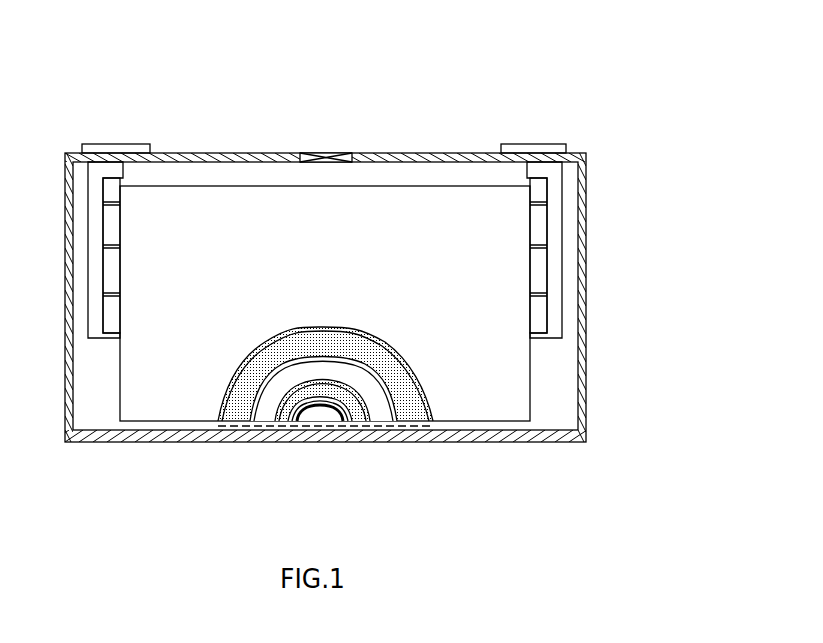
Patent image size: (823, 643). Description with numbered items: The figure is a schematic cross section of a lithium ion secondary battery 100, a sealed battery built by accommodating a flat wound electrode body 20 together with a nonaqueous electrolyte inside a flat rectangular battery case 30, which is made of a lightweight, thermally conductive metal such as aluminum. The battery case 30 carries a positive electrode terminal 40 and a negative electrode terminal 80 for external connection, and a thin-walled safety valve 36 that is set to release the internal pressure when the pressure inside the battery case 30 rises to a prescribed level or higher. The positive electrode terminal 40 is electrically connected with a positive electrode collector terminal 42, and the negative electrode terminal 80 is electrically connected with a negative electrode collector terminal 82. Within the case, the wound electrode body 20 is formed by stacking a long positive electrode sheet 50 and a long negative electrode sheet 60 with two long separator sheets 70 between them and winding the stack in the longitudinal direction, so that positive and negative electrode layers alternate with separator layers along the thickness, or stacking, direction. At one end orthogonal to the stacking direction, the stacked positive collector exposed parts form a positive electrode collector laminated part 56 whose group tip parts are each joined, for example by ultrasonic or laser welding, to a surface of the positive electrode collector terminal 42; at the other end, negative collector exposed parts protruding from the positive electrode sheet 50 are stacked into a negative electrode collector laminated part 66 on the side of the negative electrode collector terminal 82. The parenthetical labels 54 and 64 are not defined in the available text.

The lithium ion secondary battery 100 is at (602, 82).
The wound electrode body 20 is at (247, 185).
The battery case 30 is at (588, 380).
The safety valve 36 is at (333, 153).
The positive electrode terminal 40 is at (127, 144).
The positive electrode collector terminal 42 is at (95, 203).
The positive electrode sheet 50 is at (233, 418).
The positive electrode tab 54 is at (310, 429).
The positive electrode collector laminated part 56 is at (107, 228).
The negative electrode sheet 60 is at (288, 418).
The negative electrode tab 64 is at (322, 456).
The negative electrode collector laminated part 66 is at (543, 223).
The separator sheet 70 is at (165, 375).
The negative electrode terminal 80 is at (543, 144).
The negative electrode collector terminal 82 is at (553, 203).